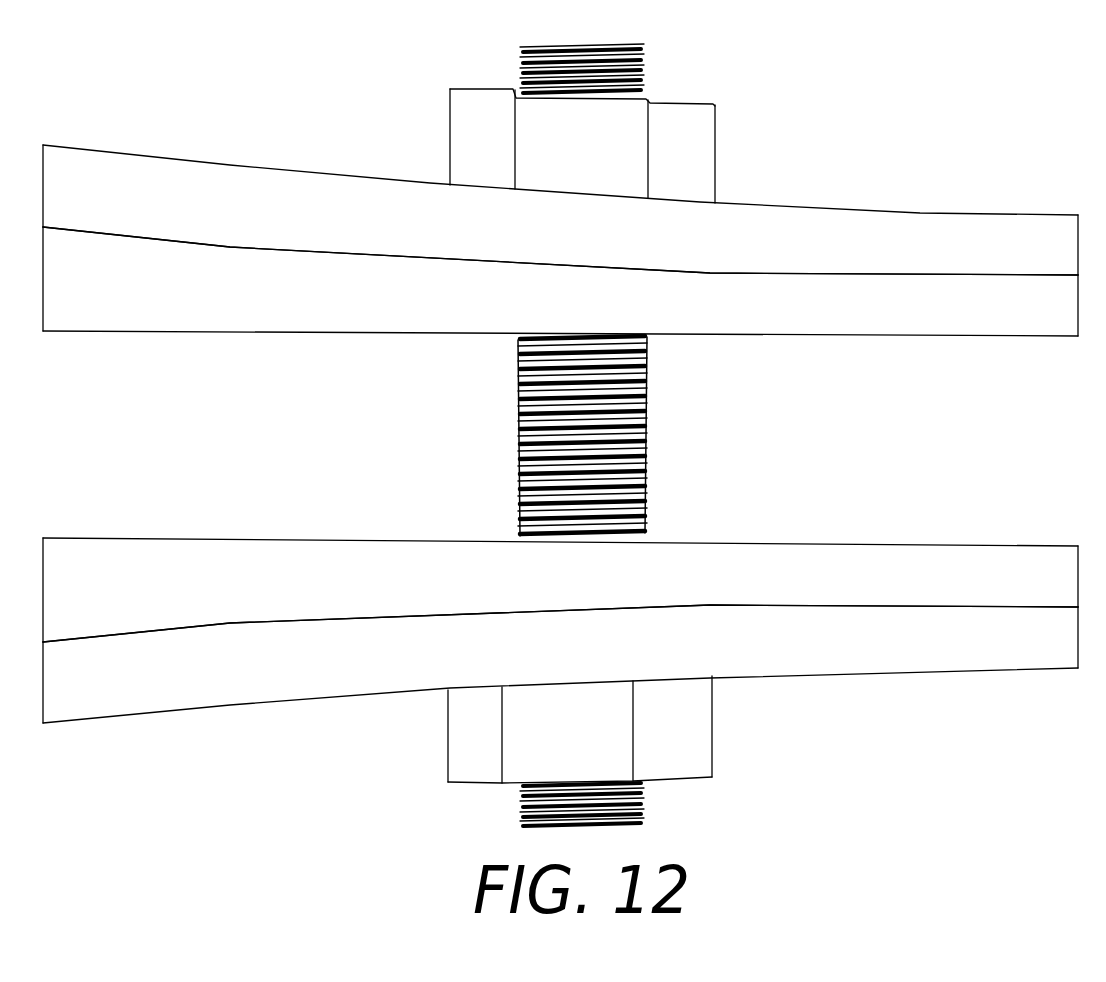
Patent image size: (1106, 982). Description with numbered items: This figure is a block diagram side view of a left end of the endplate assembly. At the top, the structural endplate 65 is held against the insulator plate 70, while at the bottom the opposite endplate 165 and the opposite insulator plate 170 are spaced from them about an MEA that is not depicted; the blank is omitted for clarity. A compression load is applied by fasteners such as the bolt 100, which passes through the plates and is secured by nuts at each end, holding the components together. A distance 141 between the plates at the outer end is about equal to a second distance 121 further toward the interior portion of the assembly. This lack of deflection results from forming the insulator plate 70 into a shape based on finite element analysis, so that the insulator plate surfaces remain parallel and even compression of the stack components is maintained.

The structural endplate 65 is at (560, 210).
The insulator plate 70 is at (560, 281).
The opposite insulator plate 170 is at (560, 590).
The opposite endplate 165 is at (560, 664).
The bolt 100 is at (652, 452).
The distance 141 is at (90, 352).
The second distance 121 is at (413, 352).